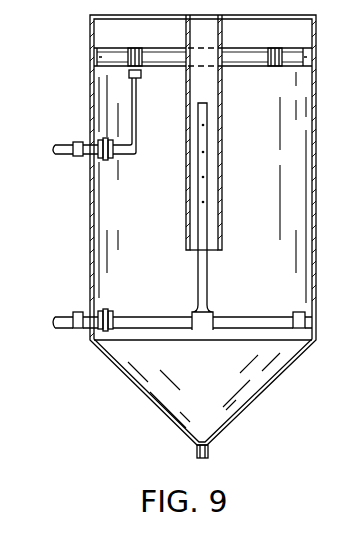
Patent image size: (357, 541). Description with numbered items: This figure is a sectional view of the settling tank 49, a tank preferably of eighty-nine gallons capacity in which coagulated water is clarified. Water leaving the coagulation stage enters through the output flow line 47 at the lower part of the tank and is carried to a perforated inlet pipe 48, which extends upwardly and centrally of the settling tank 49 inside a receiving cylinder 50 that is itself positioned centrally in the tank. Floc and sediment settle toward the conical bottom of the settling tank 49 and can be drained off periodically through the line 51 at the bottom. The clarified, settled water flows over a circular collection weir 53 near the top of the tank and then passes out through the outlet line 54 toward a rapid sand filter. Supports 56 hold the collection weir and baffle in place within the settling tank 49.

The output flow line 47 is at (63, 318).
The perforated inlet pipe 48 is at (200, 262).
The settling tank 49 is at (257, 224).
The receiving cylinder 50 is at (222, 85).
The drain line 51 is at (197, 453).
The circular collection weir 53 is at (138, 53).
The outlet line 54 is at (157, 93).
The supports 56 is at (113, 57).